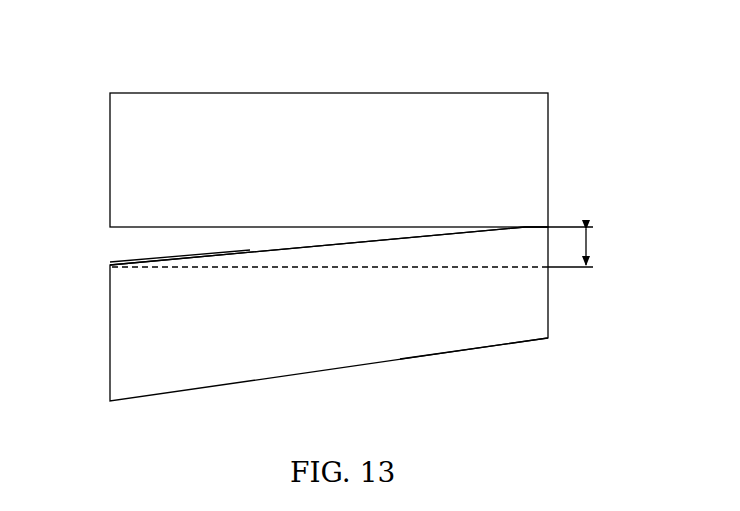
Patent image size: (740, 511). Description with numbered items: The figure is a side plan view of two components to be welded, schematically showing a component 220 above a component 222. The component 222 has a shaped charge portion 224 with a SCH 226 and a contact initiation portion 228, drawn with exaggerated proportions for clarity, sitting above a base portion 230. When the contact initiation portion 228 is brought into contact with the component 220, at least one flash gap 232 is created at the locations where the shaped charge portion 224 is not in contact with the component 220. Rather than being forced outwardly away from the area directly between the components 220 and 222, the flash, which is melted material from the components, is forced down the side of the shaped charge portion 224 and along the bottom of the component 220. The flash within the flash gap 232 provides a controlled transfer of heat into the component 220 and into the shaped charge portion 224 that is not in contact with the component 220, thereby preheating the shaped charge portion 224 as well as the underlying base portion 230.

The component 220 is at (60, 106).
The component 222 is at (84, 358).
The shaped charge portion 224 is at (518, 268).
The SCH 226 is at (590, 237).
The contact initiation portion 228 is at (540, 227).
The base portion 230 is at (497, 346).
The flash gap 232 is at (112, 252).